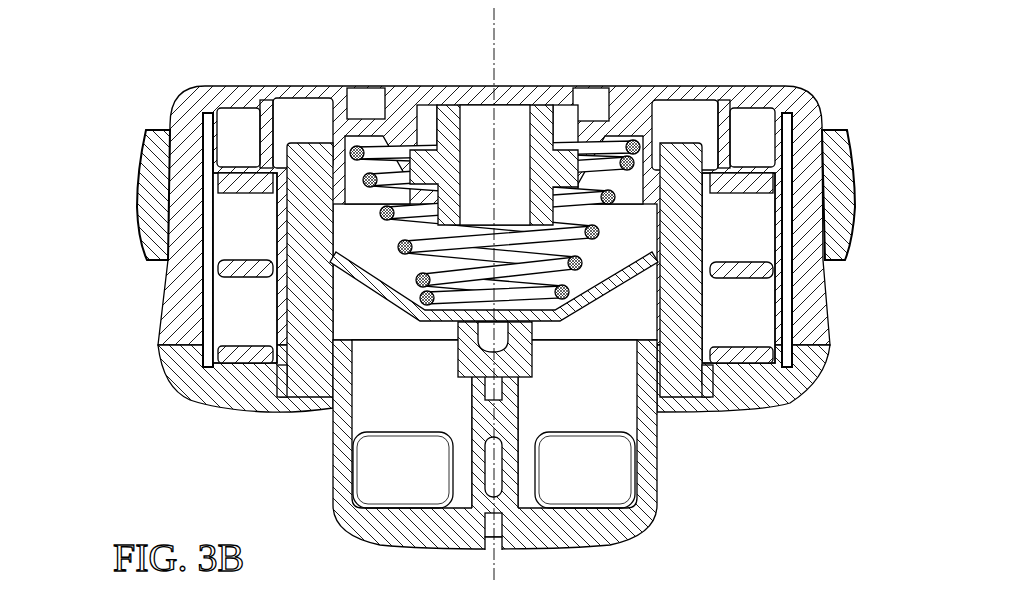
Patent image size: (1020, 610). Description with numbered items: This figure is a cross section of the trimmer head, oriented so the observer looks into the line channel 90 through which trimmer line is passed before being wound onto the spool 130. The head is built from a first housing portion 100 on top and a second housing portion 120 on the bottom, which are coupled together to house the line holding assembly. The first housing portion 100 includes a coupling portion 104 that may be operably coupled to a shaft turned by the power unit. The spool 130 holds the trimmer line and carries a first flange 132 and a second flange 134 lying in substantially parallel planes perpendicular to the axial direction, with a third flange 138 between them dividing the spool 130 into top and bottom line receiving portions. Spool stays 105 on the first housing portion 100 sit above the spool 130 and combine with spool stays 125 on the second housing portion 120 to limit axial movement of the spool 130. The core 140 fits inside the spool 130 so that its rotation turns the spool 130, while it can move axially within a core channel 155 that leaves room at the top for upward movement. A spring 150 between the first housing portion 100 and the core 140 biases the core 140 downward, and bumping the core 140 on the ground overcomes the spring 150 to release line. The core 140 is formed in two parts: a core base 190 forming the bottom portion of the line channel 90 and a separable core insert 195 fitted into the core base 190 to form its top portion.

The line channel 90 is at (484, 341).
The first housing portion 100 is at (258, 95).
The coupling portion 104 is at (486, 104).
The spool stays 105 is at (257, 137).
The second housing portion 120 is at (813, 360).
The spool stays 125 is at (268, 372).
The spool 130 is at (268, 354).
The first flange 132 is at (225, 182).
The second flange 134 is at (222, 353).
The third flange 138 is at (225, 268).
The core 140 is at (317, 500).
The spring 150 is at (628, 160).
The core channel 155 is at (303, 116).
The core base 190 is at (660, 362).
The core insert 195 is at (545, 322).